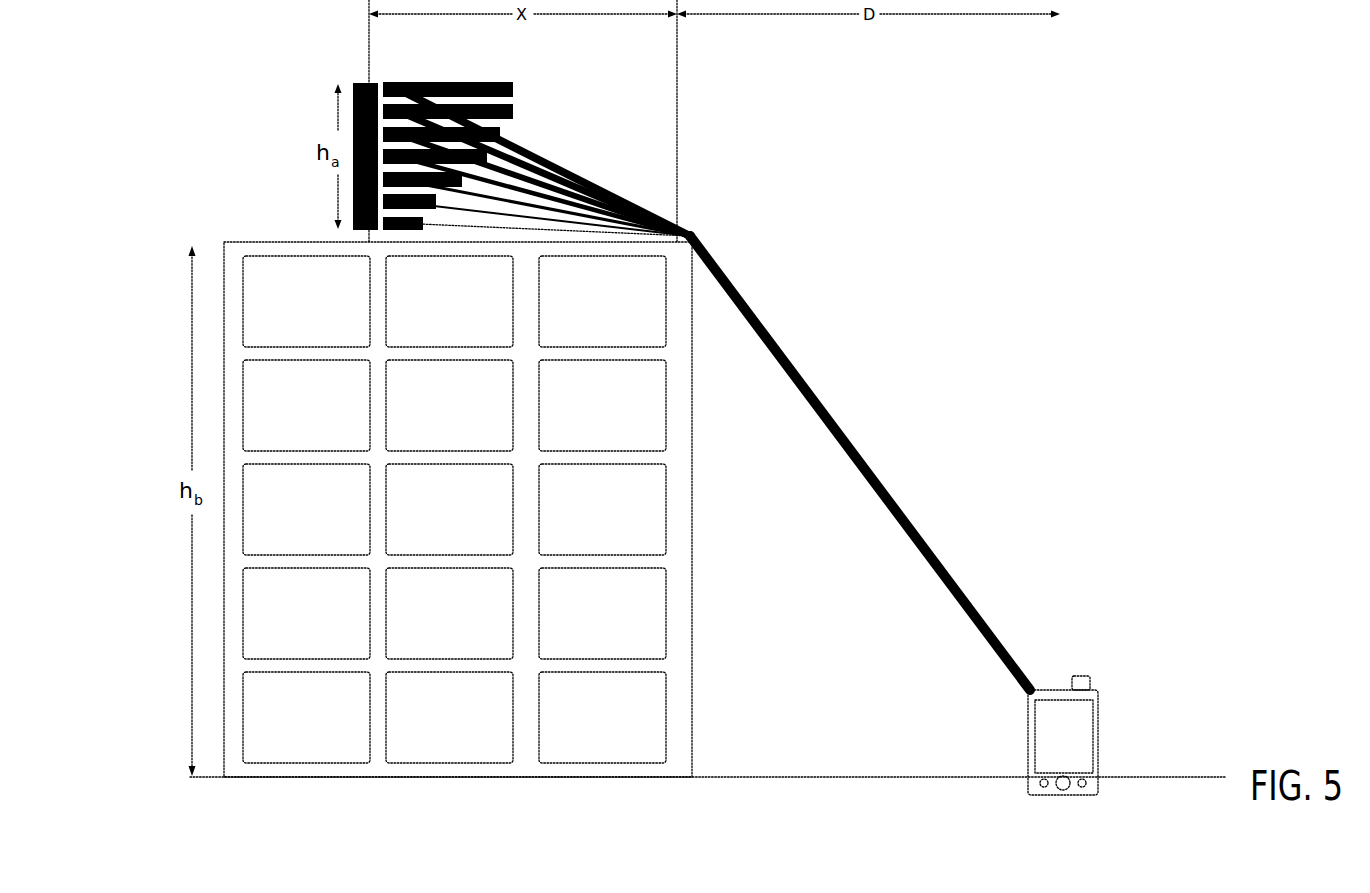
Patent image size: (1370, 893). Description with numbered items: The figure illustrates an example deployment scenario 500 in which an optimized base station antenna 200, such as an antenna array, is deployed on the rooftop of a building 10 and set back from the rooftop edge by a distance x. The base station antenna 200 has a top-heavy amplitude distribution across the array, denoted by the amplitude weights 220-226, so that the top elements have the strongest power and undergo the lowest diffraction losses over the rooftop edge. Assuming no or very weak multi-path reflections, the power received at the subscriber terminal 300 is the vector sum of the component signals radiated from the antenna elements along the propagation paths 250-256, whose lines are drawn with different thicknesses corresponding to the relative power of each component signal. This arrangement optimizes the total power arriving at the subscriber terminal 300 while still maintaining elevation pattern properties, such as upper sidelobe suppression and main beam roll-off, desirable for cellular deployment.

The building 10 is at (693, 633).
The base station antenna 200 is at (352, 82).
The amplitude weights 220-226 is at (435, 82).
The propagation paths 250-256 is at (571, 123).
The subscriber terminal 300 is at (1100, 708).
The deployment scenario 500 is at (1201, 49).